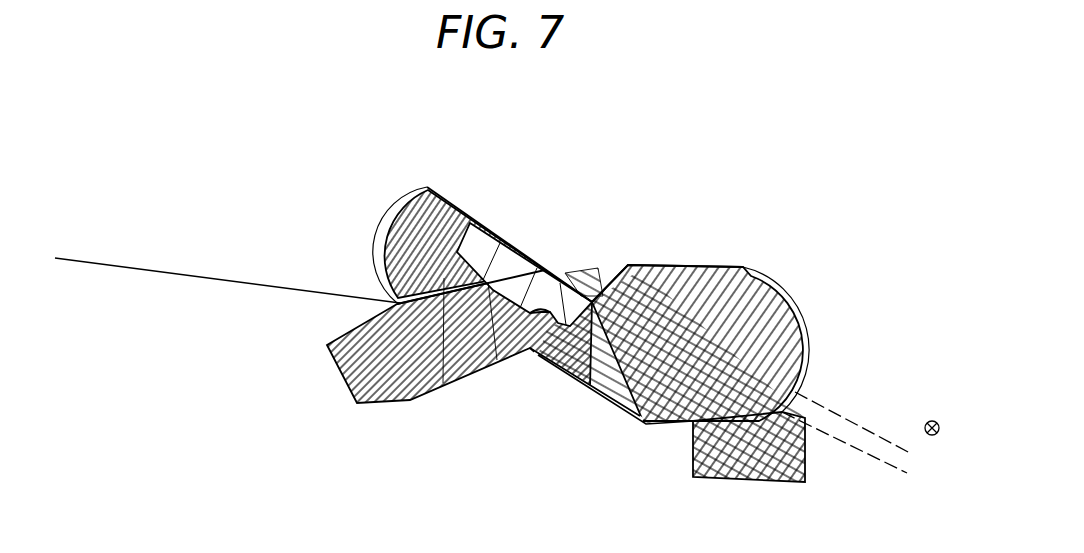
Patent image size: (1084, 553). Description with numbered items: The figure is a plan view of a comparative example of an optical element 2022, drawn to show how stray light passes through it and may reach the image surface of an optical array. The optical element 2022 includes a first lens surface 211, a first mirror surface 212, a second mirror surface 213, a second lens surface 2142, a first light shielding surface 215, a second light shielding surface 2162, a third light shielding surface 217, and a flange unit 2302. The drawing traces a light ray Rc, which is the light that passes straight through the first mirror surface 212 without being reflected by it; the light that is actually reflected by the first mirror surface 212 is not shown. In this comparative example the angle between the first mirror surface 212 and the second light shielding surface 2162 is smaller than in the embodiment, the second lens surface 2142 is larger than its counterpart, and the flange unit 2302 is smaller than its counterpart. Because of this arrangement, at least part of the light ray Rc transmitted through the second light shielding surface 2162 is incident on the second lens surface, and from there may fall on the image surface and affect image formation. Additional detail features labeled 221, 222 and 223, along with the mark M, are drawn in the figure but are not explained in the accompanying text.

The optical element 2022 is at (670, 172).
The first lens surface 211 is at (412, 194).
The first mirror surface 212 is at (492, 231).
The cutting edge 221 is at (478, 228).
The blade body 222 is at (453, 383).
The protrusion 223 is at (588, 280).
The second light shielding surface 2162 is at (629, 265).
The second lens surface 2142 is at (743, 266).
The first light shielding surface 215 is at (500, 358).
The third light shielding surface 217 is at (525, 358).
The second mirror surface 213 is at (587, 392).
The flange unit 2302 is at (733, 480).
The light ray Rc is at (213, 281).
The rotation axis M is at (934, 420).